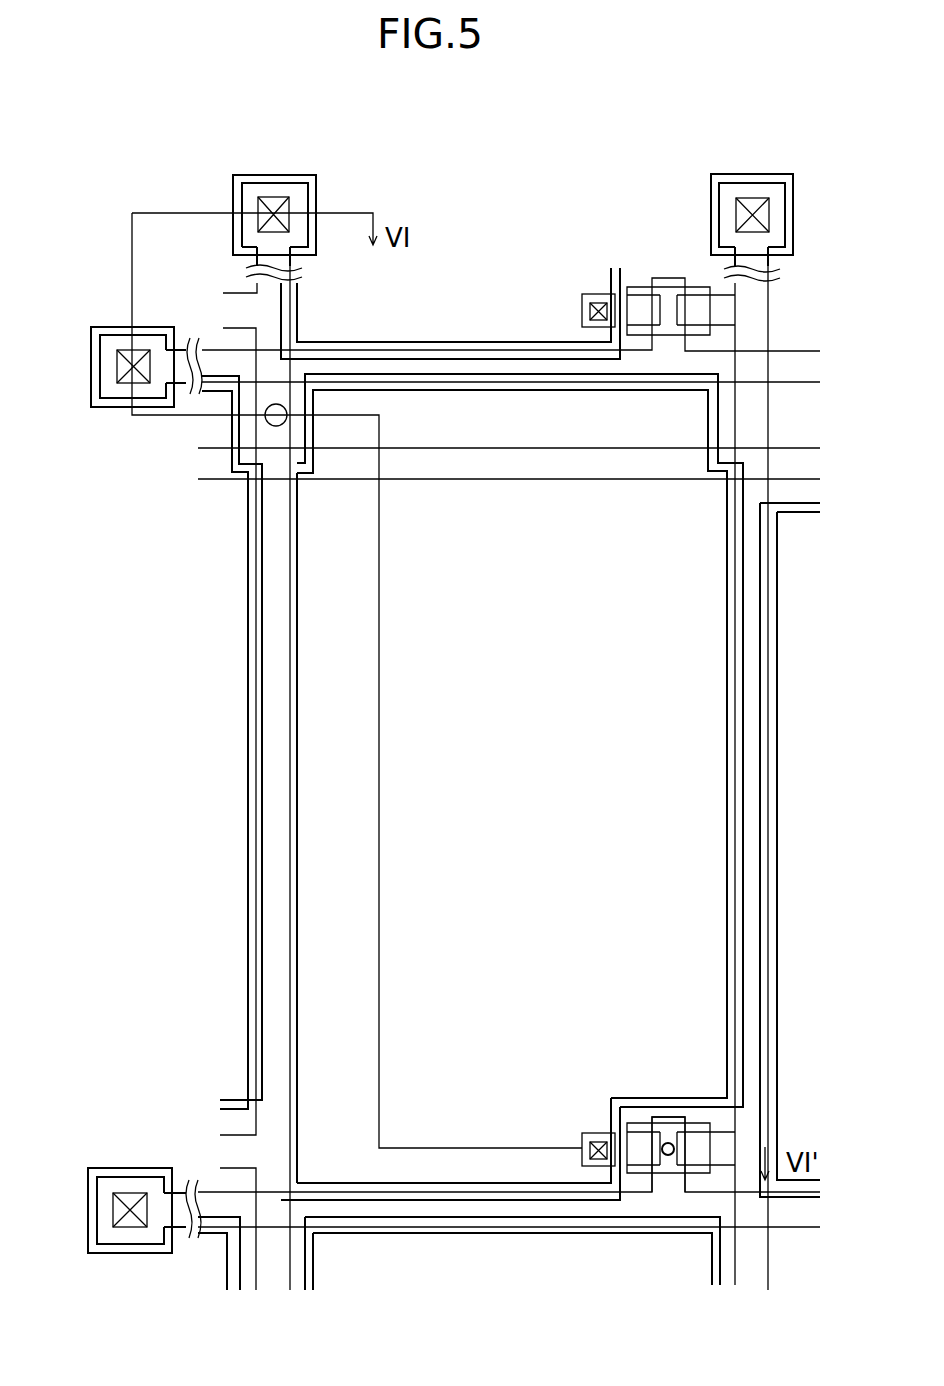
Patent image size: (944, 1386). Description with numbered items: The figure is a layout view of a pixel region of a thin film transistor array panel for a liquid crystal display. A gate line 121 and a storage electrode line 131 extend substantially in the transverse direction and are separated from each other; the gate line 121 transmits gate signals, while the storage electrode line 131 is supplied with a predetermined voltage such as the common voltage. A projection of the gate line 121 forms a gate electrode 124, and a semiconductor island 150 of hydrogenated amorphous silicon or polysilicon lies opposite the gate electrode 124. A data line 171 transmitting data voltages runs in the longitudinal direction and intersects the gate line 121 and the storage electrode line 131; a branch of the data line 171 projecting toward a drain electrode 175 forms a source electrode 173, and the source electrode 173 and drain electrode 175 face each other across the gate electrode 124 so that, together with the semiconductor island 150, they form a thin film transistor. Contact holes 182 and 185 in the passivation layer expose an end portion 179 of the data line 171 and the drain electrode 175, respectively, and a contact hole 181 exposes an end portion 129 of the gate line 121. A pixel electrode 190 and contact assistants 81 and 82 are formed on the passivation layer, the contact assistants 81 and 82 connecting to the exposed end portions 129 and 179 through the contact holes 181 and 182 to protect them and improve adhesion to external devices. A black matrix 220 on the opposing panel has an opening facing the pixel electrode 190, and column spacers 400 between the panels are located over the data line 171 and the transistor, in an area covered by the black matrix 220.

The column spacer 400 is at (265, 418).
The contact assistant 82 is at (710, 227).
The contact hole 182 is at (770, 213).
The end portion of the data line 179 is at (787, 232).
The storage electrode line 131 is at (630, 467).
The black matrix 220 is at (726, 577).
The pixel electrode 190 is at (743, 611).
The data line 171 is at (768, 694).
The drain electrode 175 is at (582, 1137).
The source electrode 173 is at (702, 1122).
The contact hole 185 is at (600, 1133).
The contact hole 181 is at (127, 1193).
The contact assistant 81 is at (88, 1218).
The end portion of the gate line 129 is at (138, 1245).
The gate electrode 124 is at (663, 1183).
The semiconductor island 150 is at (698, 1175).
The gate line 121 is at (538, 1215).